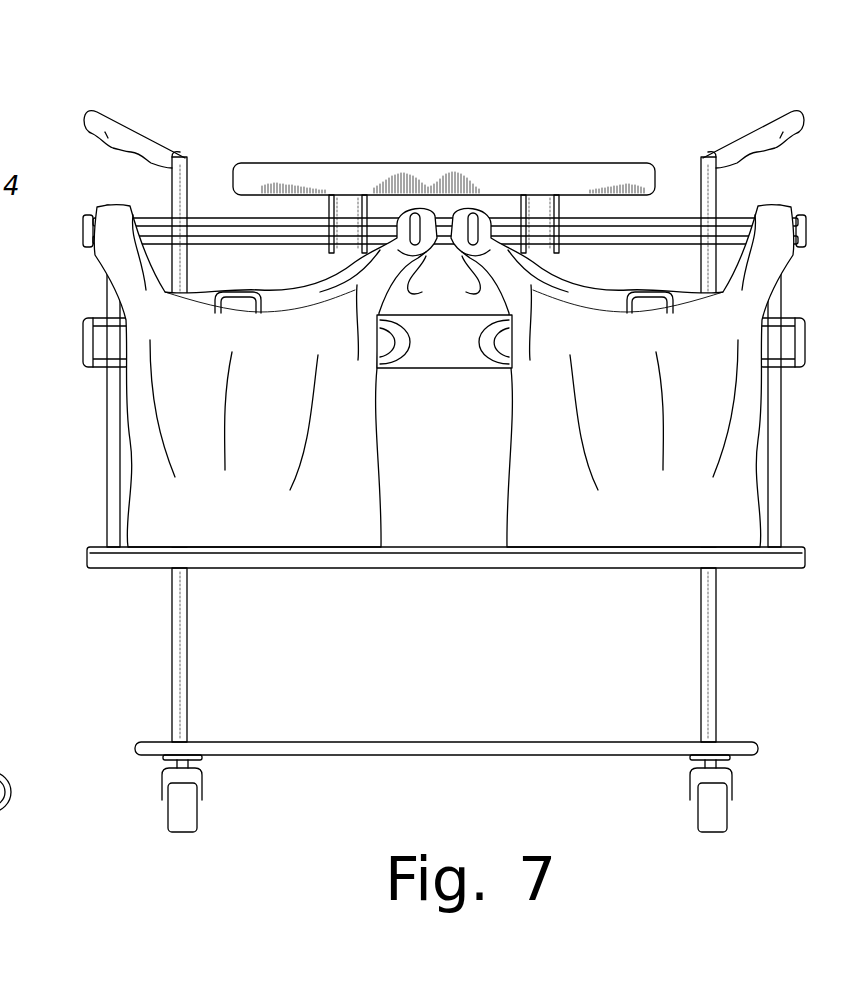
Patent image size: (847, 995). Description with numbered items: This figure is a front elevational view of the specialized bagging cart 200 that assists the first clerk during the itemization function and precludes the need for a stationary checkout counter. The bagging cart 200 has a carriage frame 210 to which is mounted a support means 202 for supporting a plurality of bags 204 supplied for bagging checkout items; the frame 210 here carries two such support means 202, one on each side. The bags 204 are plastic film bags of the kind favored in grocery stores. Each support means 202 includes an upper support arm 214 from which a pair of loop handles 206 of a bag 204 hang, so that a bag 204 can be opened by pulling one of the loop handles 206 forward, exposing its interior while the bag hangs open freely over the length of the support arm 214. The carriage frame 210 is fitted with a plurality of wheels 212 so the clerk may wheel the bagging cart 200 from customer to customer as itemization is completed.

The bagging cart 200 is at (427, 136).
The support means 202 is at (203, 178).
The bags 204 is at (256, 514).
The loop handles 206 is at (444, 323).
The carriage frame 210 is at (420, 590).
The wheels 212 is at (200, 822).
The upper support arm 214 is at (86, 231).